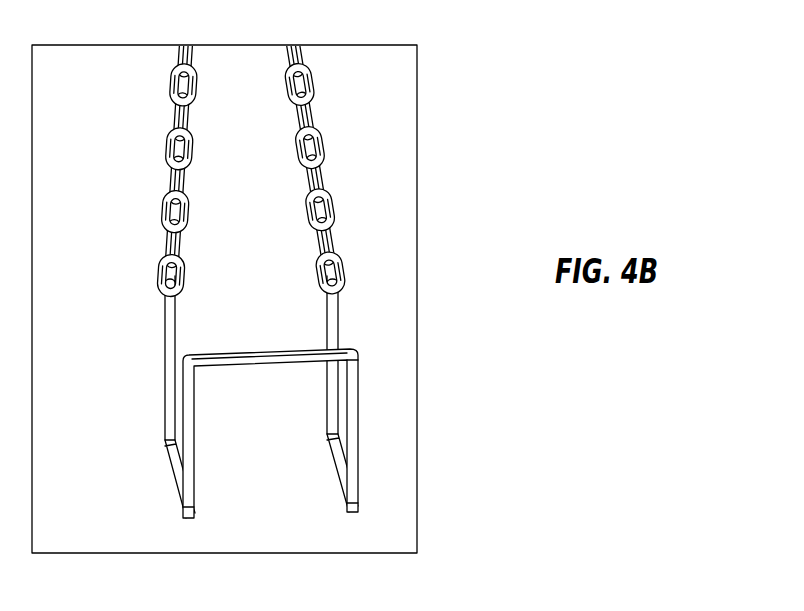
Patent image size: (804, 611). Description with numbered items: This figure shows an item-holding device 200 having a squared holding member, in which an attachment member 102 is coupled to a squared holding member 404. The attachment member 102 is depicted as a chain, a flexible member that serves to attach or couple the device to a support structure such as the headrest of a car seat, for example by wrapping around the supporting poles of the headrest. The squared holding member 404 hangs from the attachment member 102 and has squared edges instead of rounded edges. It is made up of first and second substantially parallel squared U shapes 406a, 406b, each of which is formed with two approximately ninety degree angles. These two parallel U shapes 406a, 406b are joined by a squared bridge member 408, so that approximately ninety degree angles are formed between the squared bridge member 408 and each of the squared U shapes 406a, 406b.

The hanger assembly 200 is at (112, 156).
The attachment member 102 is at (310, 91).
The squared holding member 404 is at (164, 327).
The first squared U shape 406a is at (334, 462).
The second squared U shape 406b is at (174, 464).
The squared bridge member 408 is at (252, 354).